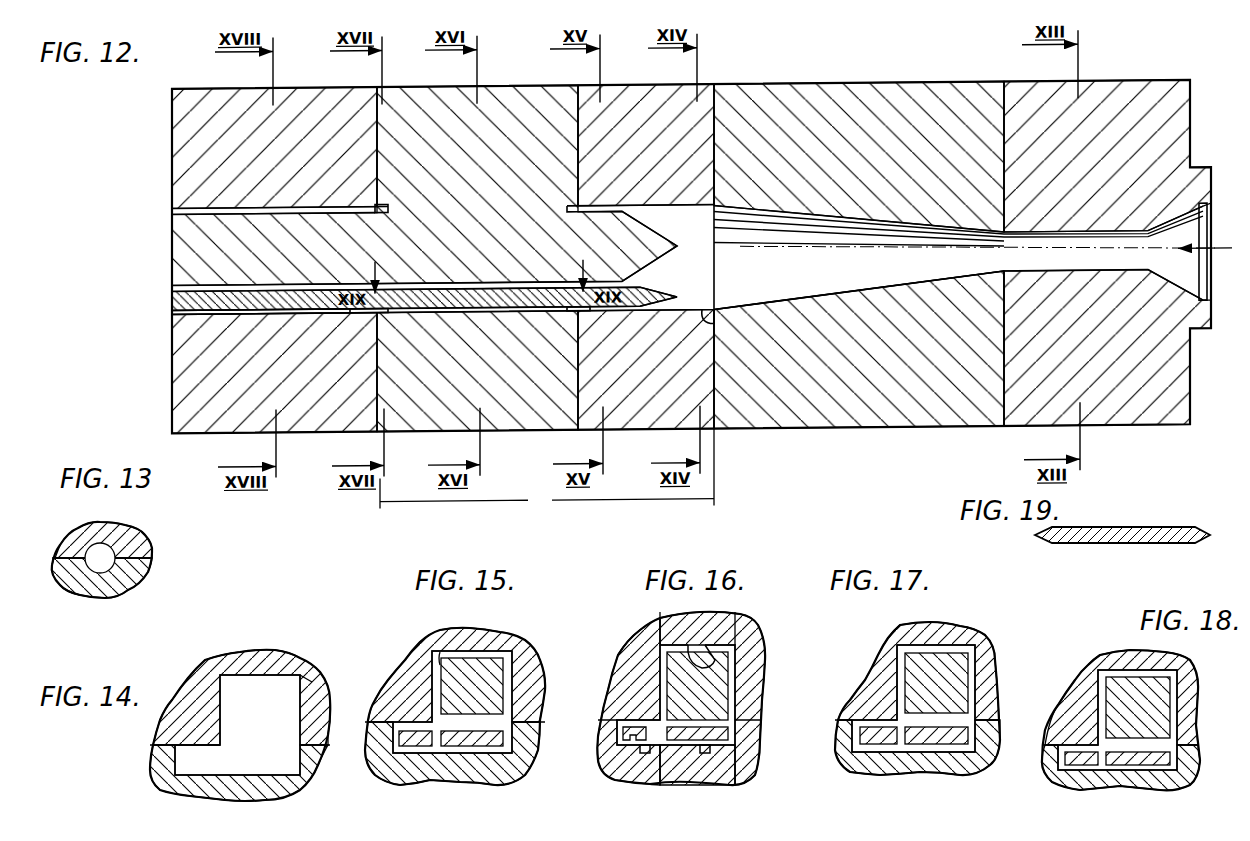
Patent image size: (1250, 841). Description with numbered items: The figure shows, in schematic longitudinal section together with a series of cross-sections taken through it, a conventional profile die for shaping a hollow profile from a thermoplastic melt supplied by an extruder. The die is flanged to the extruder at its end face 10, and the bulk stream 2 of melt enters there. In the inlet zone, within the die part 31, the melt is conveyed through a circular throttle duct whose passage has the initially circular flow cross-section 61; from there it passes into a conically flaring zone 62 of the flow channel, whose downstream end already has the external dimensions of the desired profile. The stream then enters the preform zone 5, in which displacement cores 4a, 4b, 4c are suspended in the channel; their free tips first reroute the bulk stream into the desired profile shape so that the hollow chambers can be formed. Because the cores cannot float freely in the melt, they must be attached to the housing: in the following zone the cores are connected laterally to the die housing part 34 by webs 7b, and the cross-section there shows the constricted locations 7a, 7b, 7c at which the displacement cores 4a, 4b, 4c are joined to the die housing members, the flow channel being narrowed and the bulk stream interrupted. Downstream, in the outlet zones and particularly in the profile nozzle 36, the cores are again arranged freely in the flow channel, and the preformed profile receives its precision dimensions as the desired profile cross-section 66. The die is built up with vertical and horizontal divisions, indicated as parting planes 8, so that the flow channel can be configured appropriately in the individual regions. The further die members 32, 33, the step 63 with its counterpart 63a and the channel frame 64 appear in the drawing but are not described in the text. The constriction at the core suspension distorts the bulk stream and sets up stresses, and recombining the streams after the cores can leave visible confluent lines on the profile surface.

In FIG. 12, the bulk stream 2 is at (1214, 259).
In FIG. 12, the displacement core 4a is at (465, 251).
In FIG. 15, the displacement core 4a is at (458, 680).
In FIG. 16, the displacement core 4a is at (700, 690).
In FIG. 17, the displacement core 4a is at (950, 680).
In FIG. 18, the displacement core 4a is at (1160, 700).
In FIG. 12, the displacement core 4b is at (500, 308).
In FIG. 15, the displacement core 4b is at (414, 738).
In FIG. 16, the displacement core 4b is at (635, 735).
In FIG. 17, the displacement core 4b is at (872, 740).
In FIG. 18, the displacement core 4b is at (1160, 758).
In FIG. 12, the displacement core 4c is at (540, 105).
In FIG. 15, the displacement core 4c is at (490, 738).
In FIG. 16, the displacement core 4c is at (712, 732).
In FIG. 17, the displacement core 4c is at (938, 738).
In FIG. 12, the preform zone 5 is at (547, 470).
In FIG. 16, the constricted location 7a is at (722, 662).
In FIG. 16, the web 7b is at (708, 753).
In FIG. 19, the web 7b is at (1140, 540).
In FIG. 16, the constricted location 7c is at (645, 753).
In FIG. 12, the parting plane 8 is at (1011, 105).
In FIG. 13, the parting plane 8 is at (139, 543).
In FIG. 14, the parting plane 8 is at (316, 766).
In FIG. 15, the parting plane 8 is at (536, 745).
In FIG. 16, the parting plane 8 is at (745, 636).
In FIG. 17, the parting plane 8 is at (986, 728).
In FIG. 18, the parting plane 8 is at (1064, 700).
In FIG. 12, the end face 10 is at (1213, 192).
In FIG. 12, the die part 31 is at (1165, 108).
In FIG. 13, the die part 31 is at (92, 595).
In FIG. 12, the converging block 32 is at (937, 108).
In FIG. 12, the intermediate block 33 is at (667, 105).
In FIG. 14, the intermediate block 33 is at (218, 700).
In FIG. 15, the intermediate block 33 is at (514, 660).
In FIG. 16, the die housing part 34 is at (648, 640).
In FIG. 17, the die housing part 34 is at (966, 640).
In FIG. 12, the profile nozzle 36 is at (345, 103).
In FIG. 18, the profile nozzle 36 is at (1095, 672).
In FIG. 12, the circular flow cross-section 61 is at (1202, 283).
In FIG. 13, the circular flow cross-section 61 is at (115, 588).
In FIG. 12, the conically flaring zone 62 is at (880, 296).
In FIG. 12, the step 63 is at (714, 334).
In FIG. 14, the step 63 is at (302, 668).
In FIG. 15, the step 63a is at (440, 652).
In FIG. 16, the channel frame 64 is at (735, 690).
In FIG. 17, the channel frame 64 is at (910, 652).
In FIG. 12, the profile cross-section 66 is at (172, 315).
In FIG. 18, the profile cross-section 66 is at (1170, 676).